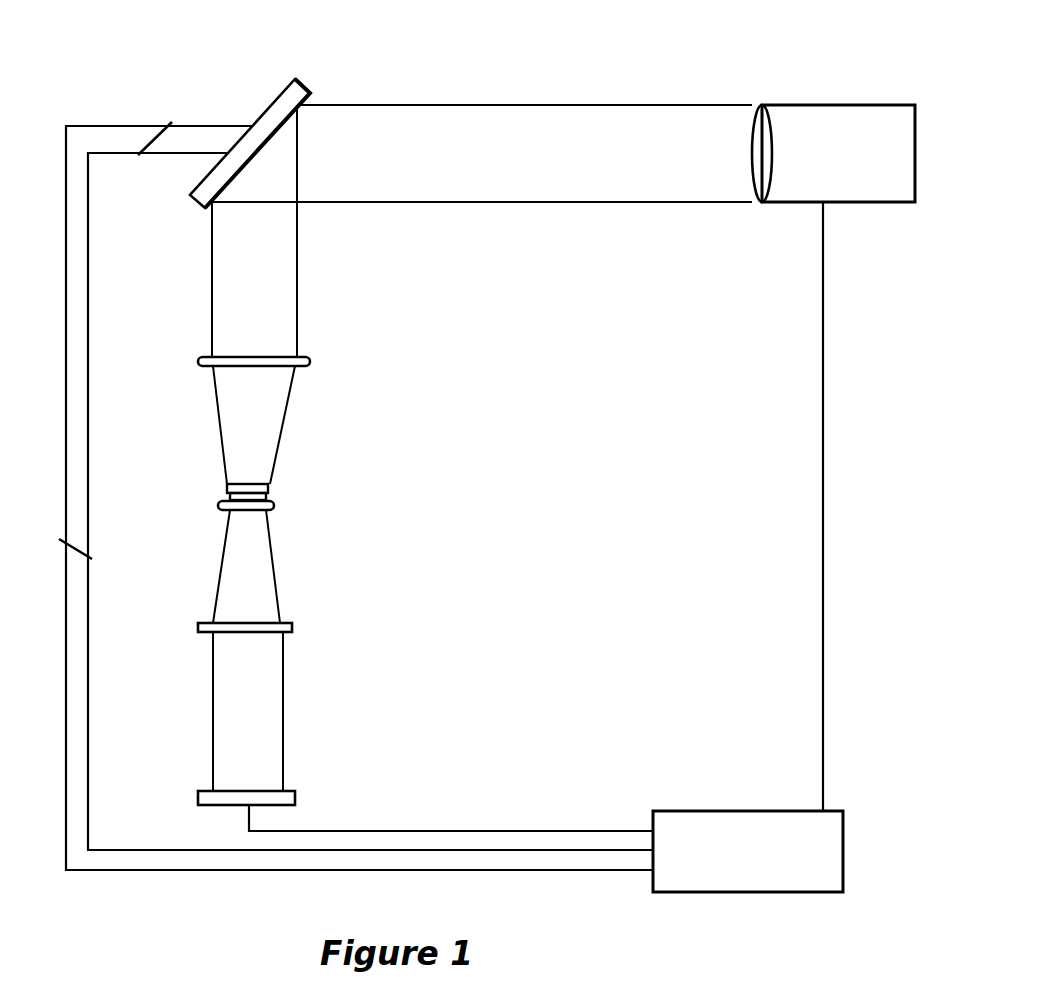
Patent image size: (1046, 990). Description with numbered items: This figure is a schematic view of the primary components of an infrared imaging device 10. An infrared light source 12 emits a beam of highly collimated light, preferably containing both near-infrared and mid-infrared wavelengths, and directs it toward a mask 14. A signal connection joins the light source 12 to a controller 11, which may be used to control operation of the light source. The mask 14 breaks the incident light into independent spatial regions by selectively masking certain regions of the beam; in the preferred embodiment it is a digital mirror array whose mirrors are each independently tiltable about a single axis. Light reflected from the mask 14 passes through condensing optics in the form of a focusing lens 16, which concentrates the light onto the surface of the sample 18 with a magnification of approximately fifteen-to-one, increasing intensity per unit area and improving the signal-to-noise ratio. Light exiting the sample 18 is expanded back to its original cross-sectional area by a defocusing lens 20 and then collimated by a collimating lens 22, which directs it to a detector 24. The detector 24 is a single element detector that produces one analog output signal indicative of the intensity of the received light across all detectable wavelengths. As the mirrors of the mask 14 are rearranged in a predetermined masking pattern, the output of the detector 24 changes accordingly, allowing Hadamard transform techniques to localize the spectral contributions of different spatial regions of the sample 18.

The imaging device 10 is at (594, 44).
The controller 11 is at (722, 810).
The infrared light source 12 is at (813, 118).
The mask 14 is at (192, 200).
The focusing lens 16 is at (308, 362).
The sample 18 is at (268, 489).
The defocusing lens 20 is at (273, 508).
The collimating lens 22 is at (295, 627).
The detector 24 is at (297, 797).